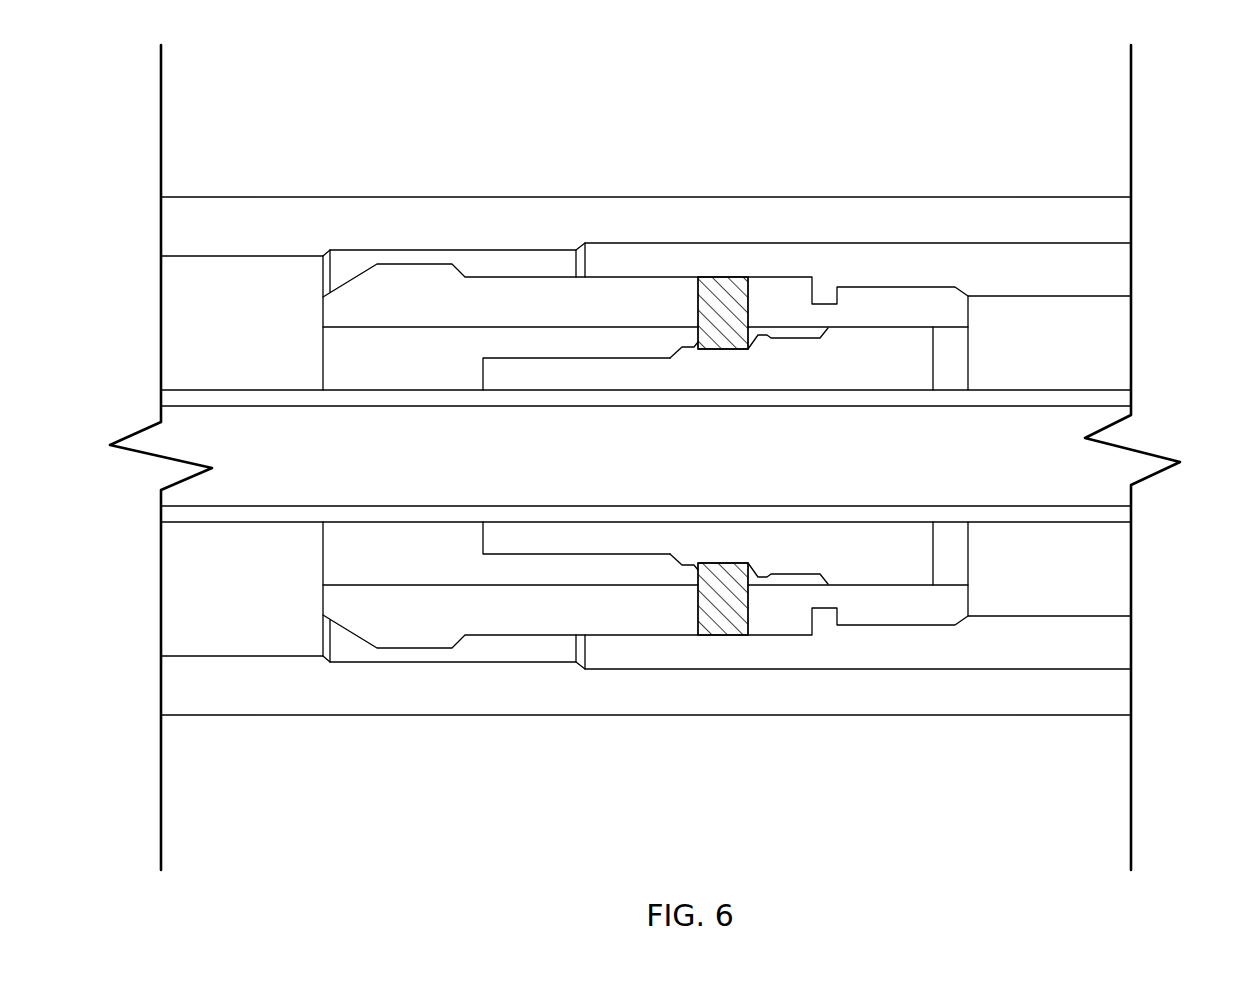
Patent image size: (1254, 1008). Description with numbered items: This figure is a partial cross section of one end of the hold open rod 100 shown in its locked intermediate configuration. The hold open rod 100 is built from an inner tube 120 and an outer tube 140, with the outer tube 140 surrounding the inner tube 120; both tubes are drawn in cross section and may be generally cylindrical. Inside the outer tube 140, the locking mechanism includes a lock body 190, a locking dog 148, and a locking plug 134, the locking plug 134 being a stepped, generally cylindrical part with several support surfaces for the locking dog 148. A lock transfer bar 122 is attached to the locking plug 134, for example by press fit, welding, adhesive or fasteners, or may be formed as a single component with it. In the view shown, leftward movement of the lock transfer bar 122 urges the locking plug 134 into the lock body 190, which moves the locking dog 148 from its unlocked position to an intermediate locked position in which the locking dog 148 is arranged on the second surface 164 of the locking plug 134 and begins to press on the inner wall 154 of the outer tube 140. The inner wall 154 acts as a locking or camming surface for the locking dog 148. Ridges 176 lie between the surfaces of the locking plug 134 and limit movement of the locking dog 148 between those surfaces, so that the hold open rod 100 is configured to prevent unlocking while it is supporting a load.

The hold open rod 100 is at (802, 80).
The inner tube 120 is at (1105, 285).
The lock transfer bar 122 is at (1105, 516).
The locking plug 134 is at (782, 558).
The outer tube 140 is at (495, 227).
The locking dog 148 is at (723, 318).
The inner wall 154 is at (715, 278).
The second surface 164 is at (722, 563).
The ridge 176 is at (686, 345).
The lock body 190 is at (489, 617).